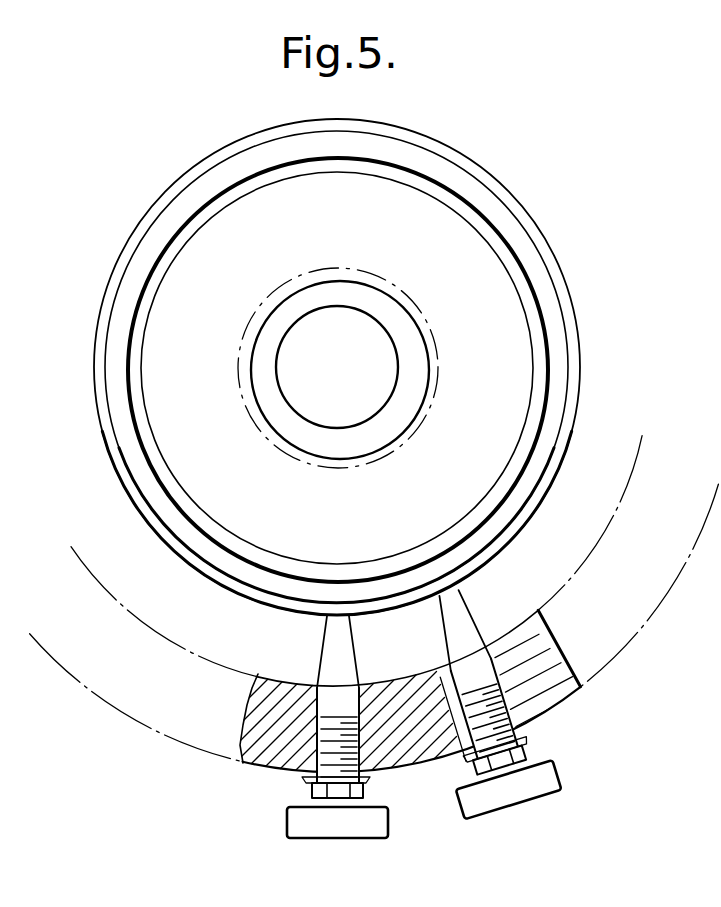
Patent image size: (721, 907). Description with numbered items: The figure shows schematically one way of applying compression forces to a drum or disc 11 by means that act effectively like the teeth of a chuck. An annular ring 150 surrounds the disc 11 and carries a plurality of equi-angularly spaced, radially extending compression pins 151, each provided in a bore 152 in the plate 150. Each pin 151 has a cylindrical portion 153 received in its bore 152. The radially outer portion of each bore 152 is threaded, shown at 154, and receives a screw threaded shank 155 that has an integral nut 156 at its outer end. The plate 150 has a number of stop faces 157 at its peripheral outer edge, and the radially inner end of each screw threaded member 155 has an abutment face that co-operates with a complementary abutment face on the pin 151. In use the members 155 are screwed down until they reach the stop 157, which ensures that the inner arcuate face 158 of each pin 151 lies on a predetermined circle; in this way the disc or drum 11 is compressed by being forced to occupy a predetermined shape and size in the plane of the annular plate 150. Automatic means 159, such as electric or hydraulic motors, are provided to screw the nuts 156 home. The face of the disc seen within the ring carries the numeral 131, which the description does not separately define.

The drum or disc 11 is at (139, 262).
The flywheel disc face 131 is at (460, 240).
The annular ring 150 is at (586, 682).
The compression pins 151 is at (466, 622).
The bores 152 is at (550, 626).
The cylindrical portion 153 is at (451, 677).
The threaded portion 154 is at (455, 690).
The screw threaded shank 155 is at (529, 741).
The nut 156 is at (527, 755).
The stop face 157 is at (312, 789).
The inner arcuate face 158 is at (337, 617).
The automatic means 159 is at (531, 797).